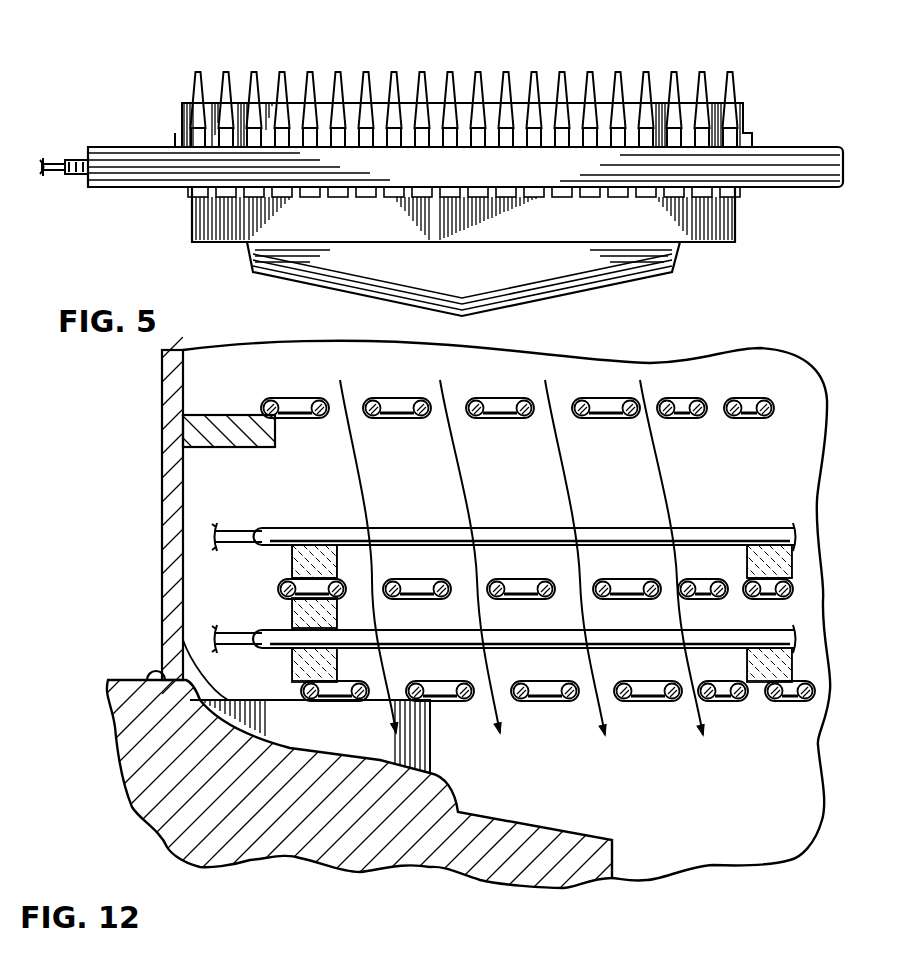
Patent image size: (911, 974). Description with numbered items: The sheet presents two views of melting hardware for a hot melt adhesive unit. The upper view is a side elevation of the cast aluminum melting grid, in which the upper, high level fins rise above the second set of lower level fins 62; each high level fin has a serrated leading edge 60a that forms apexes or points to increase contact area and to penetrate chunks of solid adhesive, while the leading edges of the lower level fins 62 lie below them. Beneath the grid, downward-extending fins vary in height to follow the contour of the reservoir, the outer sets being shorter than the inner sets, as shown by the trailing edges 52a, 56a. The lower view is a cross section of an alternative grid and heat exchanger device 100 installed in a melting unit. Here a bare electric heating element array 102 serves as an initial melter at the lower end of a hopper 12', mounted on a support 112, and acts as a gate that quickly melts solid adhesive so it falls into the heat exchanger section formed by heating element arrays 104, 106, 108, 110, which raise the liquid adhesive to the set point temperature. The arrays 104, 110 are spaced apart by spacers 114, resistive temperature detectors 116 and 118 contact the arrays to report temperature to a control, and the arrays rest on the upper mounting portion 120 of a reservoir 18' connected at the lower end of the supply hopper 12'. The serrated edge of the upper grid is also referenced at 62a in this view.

In FIG. 5, the lower level fins 62 is at (180, 116).
In FIG. 5, the serrated leading edge 60a is at (253, 70).
In FIG. 5, the header plate top surface 62a is at (348, 102).
In FIG. 5, the trailing edges 52a is at (440, 306).
In FIG. 5, the trailing edges 56a is at (595, 262).
In FIG. 12, the device 100 is at (762, 340).
In FIG. 12, the heating element array 102 is at (776, 414).
In FIG. 12, the heating element array 104 is at (766, 525).
In FIG. 12, the heating element array 106 is at (535, 576).
In FIG. 12, the heating element array 108 is at (542, 652).
In FIG. 12, the heating element array 110 is at (645, 600).
In FIG. 12, the support 112 is at (205, 450).
In FIG. 12, the spacers 114 is at (292, 662).
In FIG. 12, the resistive temperature detector 116 is at (747, 567).
In FIG. 12, the resistive temperature detector 118 is at (766, 682).
In FIG. 12, the mounting portion 120 is at (170, 645).
In FIG. 12, the hopper 12' is at (139, 515).
In FIG. 12, the reservoir 18' is at (455, 487).